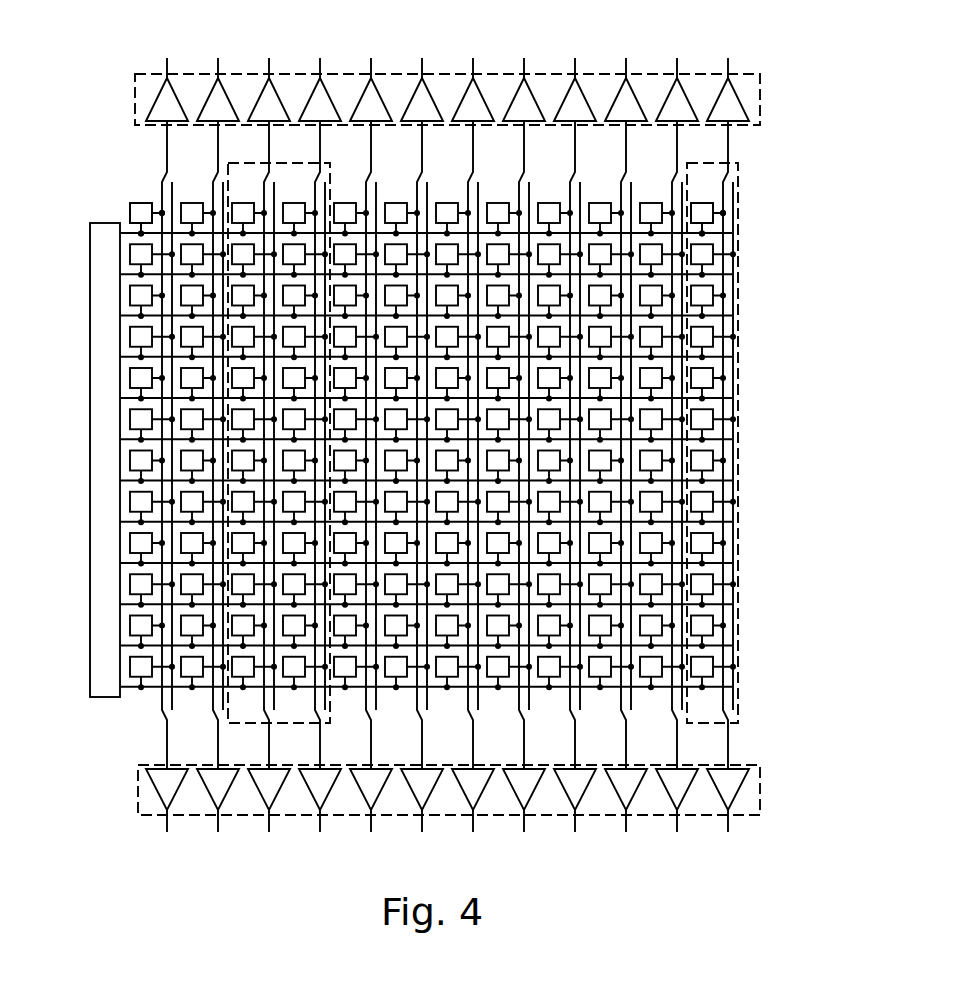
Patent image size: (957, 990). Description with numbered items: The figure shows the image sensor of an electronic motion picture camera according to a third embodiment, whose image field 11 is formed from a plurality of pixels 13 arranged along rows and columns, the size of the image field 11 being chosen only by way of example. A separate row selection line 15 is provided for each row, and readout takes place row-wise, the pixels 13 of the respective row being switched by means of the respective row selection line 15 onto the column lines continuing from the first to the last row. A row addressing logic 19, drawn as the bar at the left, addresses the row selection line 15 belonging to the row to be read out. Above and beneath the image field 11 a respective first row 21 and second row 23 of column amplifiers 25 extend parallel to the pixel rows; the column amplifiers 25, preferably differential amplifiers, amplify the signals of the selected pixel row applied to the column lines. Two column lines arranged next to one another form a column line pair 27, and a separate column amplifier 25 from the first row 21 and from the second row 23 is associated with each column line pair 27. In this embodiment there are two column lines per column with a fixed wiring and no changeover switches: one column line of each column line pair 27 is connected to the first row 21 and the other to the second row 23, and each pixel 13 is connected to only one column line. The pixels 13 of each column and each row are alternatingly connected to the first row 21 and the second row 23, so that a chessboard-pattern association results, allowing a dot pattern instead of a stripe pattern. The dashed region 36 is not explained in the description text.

The image field 11 is at (826, 441).
The pixel 13 is at (126, 201).
The row selection line 15 is at (706, 233).
The row addressing logic 19 is at (87, 451).
The first row of column amplifiers 21 is at (133, 97).
The second row of column amplifiers 23 is at (134, 788).
The column amplifier 25 is at (182, 94).
The column line pair 27 is at (742, 606).
The column pair group 36 is at (225, 724).